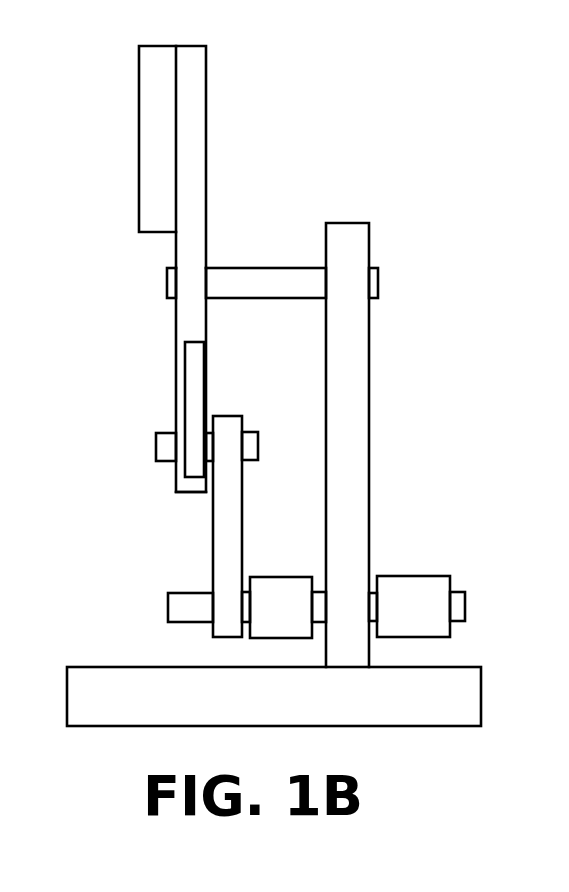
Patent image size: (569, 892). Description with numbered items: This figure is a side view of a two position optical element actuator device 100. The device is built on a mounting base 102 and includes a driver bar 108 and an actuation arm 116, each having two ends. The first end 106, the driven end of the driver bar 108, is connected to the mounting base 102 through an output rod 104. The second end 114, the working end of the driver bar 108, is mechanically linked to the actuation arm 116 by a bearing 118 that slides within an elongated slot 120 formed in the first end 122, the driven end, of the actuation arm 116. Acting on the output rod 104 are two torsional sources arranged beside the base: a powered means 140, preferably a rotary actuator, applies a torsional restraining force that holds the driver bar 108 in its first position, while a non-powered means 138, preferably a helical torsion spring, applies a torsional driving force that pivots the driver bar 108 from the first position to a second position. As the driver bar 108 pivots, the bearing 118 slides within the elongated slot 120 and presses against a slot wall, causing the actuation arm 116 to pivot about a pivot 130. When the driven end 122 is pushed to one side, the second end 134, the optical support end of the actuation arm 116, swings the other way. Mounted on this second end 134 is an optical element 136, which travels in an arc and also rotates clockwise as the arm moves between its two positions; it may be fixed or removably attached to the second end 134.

The two position optical element actuator device 100 is at (330, 59).
The mounting base 102 is at (373, 649).
The output rod 104 is at (465, 600).
The first end of driver bar 106 is at (216, 639).
The driver bar 108 is at (213, 552).
The second end of driver bar 114 is at (227, 412).
The actuation arm 116 is at (206, 225).
The bearing 118 is at (156, 450).
The elongated slot 120 is at (176, 397).
The first end of actuation arm 122 is at (180, 500).
The pivot 130 is at (378, 280).
The second end of actuation arm 134 is at (206, 100).
The optical element 136 is at (139, 113).
The non-powered means 138 is at (271, 577).
The powered means 140 is at (415, 577).